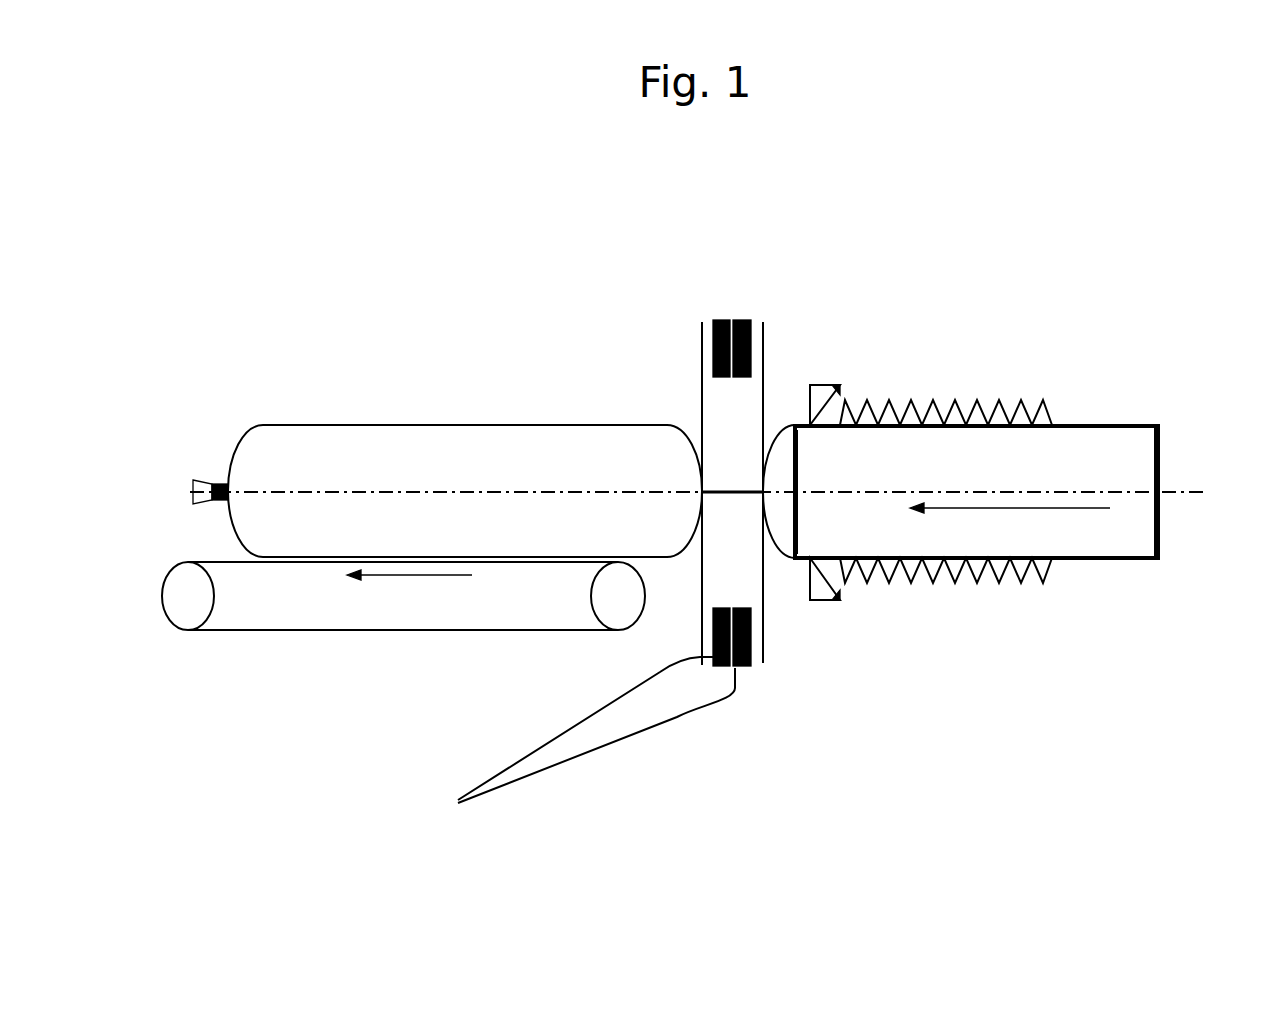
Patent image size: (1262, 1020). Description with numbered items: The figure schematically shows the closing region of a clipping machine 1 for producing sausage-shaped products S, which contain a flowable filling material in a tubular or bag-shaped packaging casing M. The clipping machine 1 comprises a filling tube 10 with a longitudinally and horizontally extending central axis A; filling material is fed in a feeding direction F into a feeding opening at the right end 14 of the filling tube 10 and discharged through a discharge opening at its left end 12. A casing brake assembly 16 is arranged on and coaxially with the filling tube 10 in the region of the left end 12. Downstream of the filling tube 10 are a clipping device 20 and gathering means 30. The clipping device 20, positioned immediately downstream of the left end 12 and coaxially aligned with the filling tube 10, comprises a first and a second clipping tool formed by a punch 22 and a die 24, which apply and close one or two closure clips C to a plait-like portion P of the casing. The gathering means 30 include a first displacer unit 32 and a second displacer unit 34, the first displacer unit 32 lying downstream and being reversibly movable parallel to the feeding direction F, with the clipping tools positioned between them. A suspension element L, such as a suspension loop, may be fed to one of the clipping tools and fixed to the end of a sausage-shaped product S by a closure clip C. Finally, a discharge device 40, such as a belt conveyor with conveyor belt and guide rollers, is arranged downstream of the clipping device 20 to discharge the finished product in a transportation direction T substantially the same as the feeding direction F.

The clipping machine 1 is at (900, 265).
The filling tube 10 is at (1088, 425).
The left end 12 is at (800, 520).
The right end 14 is at (1160, 455).
The casing brake assembly 16 is at (832, 387).
The clipping device 20 is at (635, 363).
The punch 22 is at (750, 347).
The die 24 is at (713, 640).
The gathering means 30 is at (857, 707).
The first displacer unit 32 is at (763, 577).
The second displacer unit 34 is at (703, 553).
The discharge device 40 is at (427, 643).
The central axis A is at (1203, 495).
The closure clip C is at (208, 482).
The feeding direction F is at (1010, 522).
The suspension element L is at (665, 727).
The packaging casing M is at (1022, 388).
The plait-like portion P is at (730, 490).
The sausage-shaped product S is at (447, 423).
The transportation direction T is at (409, 590).